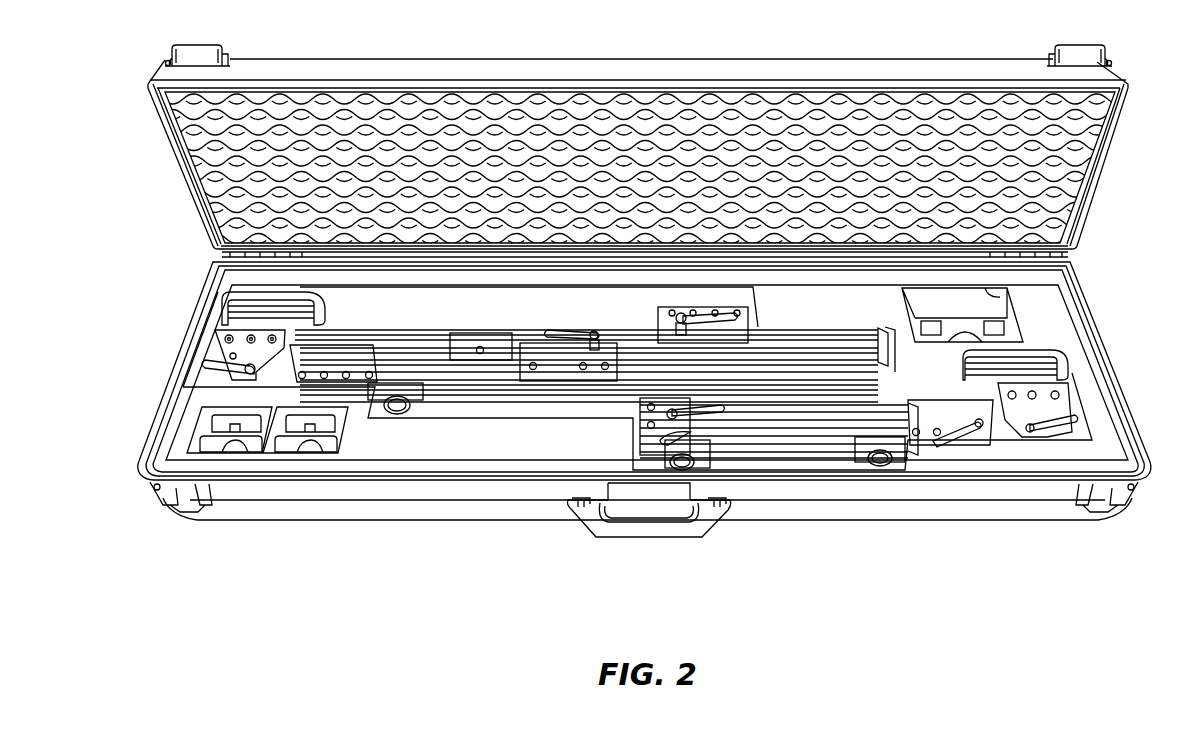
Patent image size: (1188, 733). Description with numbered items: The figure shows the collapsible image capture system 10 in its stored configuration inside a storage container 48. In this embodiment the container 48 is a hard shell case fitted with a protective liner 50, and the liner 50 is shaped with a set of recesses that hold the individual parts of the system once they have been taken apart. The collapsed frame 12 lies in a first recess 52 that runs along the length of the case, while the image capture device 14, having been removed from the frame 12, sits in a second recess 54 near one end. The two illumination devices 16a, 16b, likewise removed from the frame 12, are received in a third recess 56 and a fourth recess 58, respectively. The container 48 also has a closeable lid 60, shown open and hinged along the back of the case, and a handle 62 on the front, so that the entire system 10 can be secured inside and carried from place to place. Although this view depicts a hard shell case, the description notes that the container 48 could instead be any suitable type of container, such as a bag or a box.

The collapsible image capture system 10 is at (487, 425).
The frame 12 is at (789, 412).
The image capture device 14 is at (972, 308).
The illumination device 16a is at (318, 430).
The illumination device 16b is at (220, 430).
The storage container 48 is at (662, 282).
The protective liner 50 is at (1080, 339).
The first recess 52 is at (784, 462).
The second recess 54 is at (1007, 293).
The third recess 56 is at (303, 447).
The fourth recess 58 is at (230, 447).
The closeable lid 60 is at (1123, 118).
The handle 62 is at (633, 530).